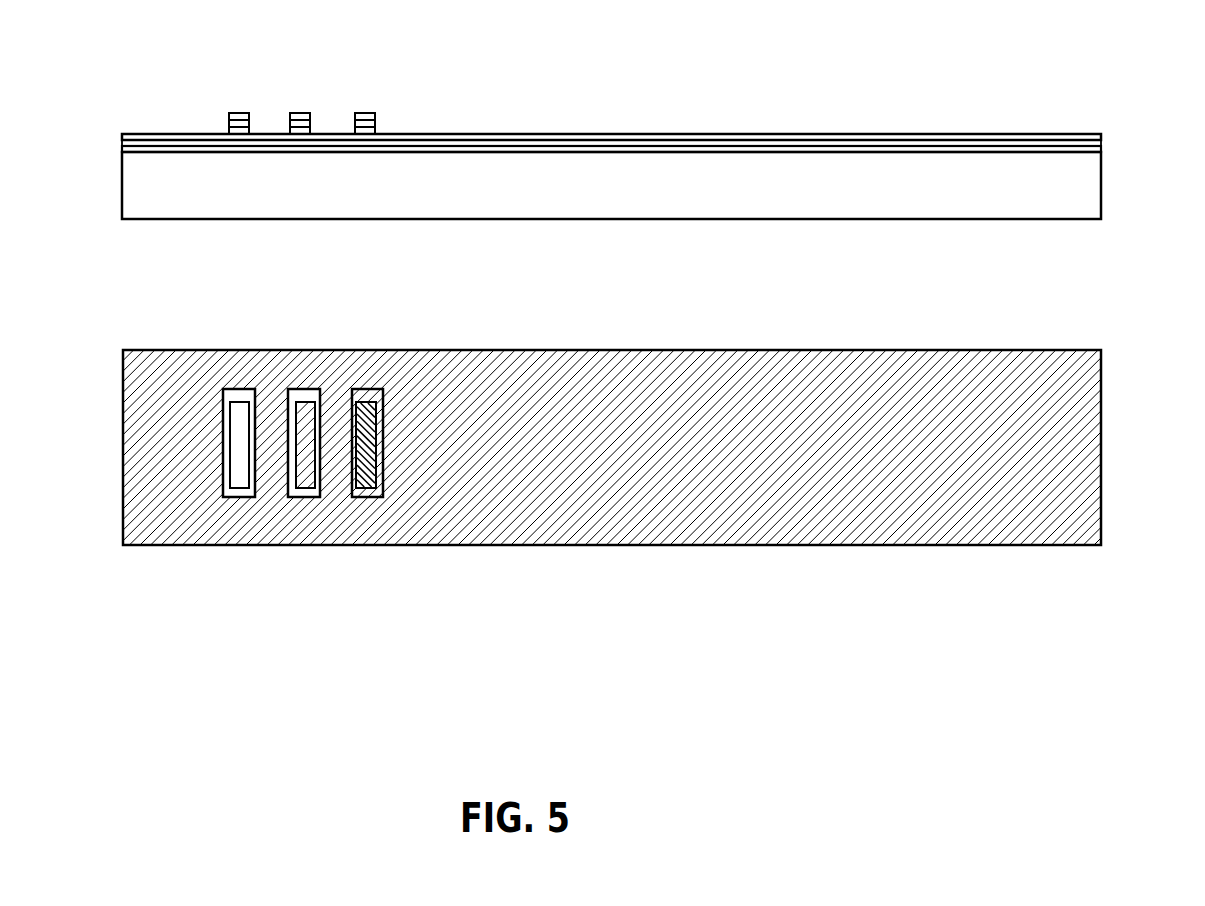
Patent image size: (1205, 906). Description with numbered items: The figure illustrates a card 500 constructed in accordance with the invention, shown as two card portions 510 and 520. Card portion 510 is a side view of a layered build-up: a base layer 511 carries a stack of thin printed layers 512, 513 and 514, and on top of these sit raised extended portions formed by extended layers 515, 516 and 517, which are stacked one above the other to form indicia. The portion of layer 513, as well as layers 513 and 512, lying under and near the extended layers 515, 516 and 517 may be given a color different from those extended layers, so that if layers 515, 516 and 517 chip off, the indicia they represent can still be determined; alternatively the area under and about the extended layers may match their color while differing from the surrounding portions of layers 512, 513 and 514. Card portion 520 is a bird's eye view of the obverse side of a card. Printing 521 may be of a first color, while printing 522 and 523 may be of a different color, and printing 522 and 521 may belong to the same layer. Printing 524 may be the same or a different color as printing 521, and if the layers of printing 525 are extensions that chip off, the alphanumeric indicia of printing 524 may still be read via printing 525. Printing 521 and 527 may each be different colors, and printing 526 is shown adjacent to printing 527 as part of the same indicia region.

The semiconductor device structure 500 is at (1146, 313).
The card portion 510 is at (160, 66).
The layer 511 is at (122, 210).
The printed layer 512 is at (122, 152).
The printed layer 513 is at (122, 140).
The printed layer 514 is at (143, 134).
The extended layer 515 is at (229, 131).
The extended layer 516 is at (230, 120).
The extended layer 517 is at (245, 113).
The card portion 520 is at (169, 332).
The printing 521 is at (123, 512).
The printing 522 is at (223, 457).
The printing 523 is at (228, 433).
The printing 524 is at (298, 489).
The printing 525 is at (306, 497).
The third opening interior 526 is at (369, 497).
The printing 527 is at (363, 489).